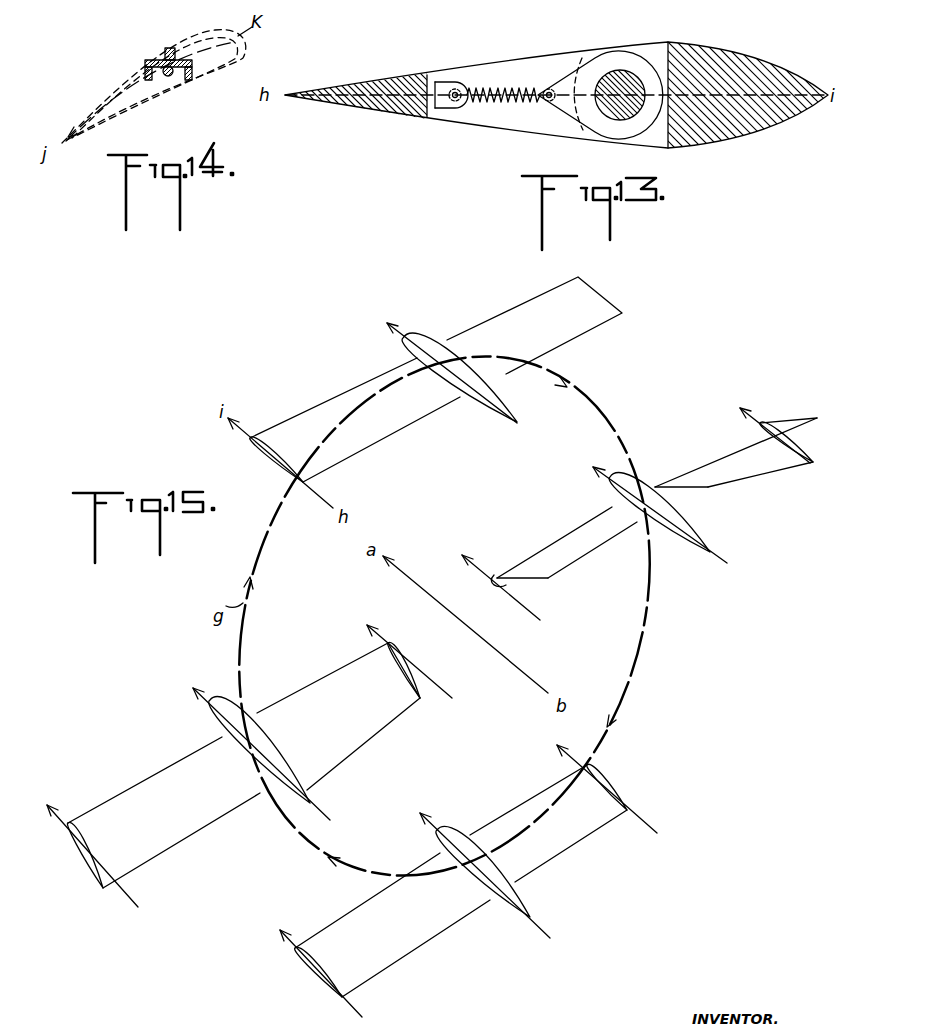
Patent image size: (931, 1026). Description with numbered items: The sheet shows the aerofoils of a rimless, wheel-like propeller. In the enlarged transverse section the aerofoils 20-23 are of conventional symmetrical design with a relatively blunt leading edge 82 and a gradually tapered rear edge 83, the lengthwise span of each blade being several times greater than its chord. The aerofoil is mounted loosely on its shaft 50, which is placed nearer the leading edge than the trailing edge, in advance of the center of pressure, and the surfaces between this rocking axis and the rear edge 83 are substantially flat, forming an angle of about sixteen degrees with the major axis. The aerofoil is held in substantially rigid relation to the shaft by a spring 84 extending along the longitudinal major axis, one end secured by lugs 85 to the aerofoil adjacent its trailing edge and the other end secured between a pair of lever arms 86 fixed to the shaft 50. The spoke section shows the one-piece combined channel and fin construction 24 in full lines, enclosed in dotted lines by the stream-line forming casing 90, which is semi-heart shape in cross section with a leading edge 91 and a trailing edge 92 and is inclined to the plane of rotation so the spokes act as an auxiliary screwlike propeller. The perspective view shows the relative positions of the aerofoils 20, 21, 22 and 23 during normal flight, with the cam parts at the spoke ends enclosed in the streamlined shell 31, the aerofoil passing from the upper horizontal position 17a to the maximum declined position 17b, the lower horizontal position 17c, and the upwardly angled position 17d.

In FIG. 13, the aerofoils 20-23 is at (731, 130).
In FIG. 13, the leading edge 82 is at (817, 88).
In FIG. 15, the leading edge 82 is at (526, 307).
In FIG. 13, the rear edge 83 is at (282, 98).
In FIG. 15, the rear edge 83 is at (745, 462).
In FIG. 13, the spring 84 is at (493, 101).
In FIG. 13, the lugs 85 is at (442, 104).
In FIG. 13, the lever arms 86 is at (563, 78).
In FIG. 13, the shaft 50 is at (612, 72).
In FIG. 14, the casing 90 is at (106, 92).
In FIG. 14, the leading edge 91 is at (243, 57).
In FIG. 14, the trailing edge 92 is at (60, 145).
In FIG. 14, the combined channel and fin construction 24 is at (192, 82).
In FIG. 15, the twelve o'clock horizontal position 17a is at (312, 418).
In FIG. 15, the maximum tilted position 17b is at (550, 554).
In FIG. 15, the bottom horizontal position 17c is at (328, 927).
In FIG. 15, the upwardly angled position 17d is at (322, 693).
In FIG. 15, the aerofoil 20 is at (372, 397).
In FIG. 15, the aerofoil 21 is at (639, 514).
In FIG. 15, the aerofoil 22 is at (415, 891).
In FIG. 15, the aerofoil 23 is at (249, 766).
In FIG. 15, the streamlined casing or shell 31 is at (433, 342).